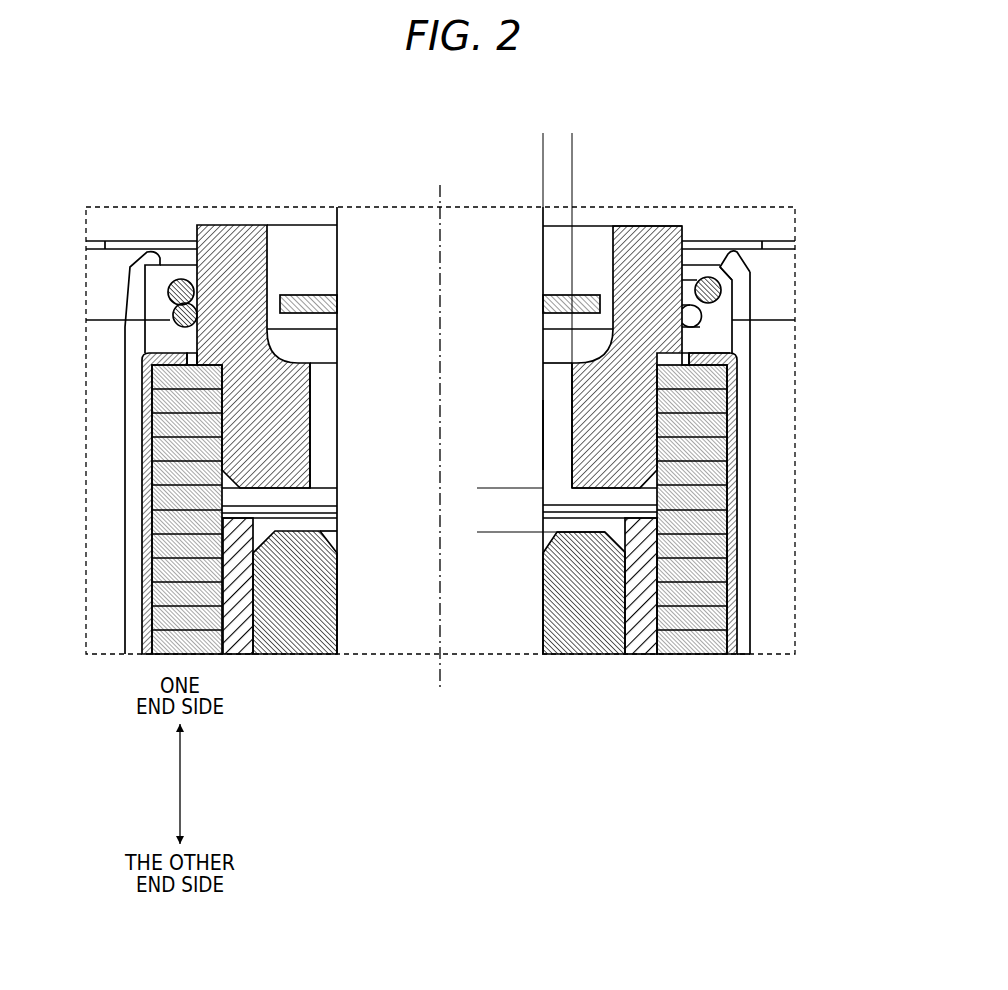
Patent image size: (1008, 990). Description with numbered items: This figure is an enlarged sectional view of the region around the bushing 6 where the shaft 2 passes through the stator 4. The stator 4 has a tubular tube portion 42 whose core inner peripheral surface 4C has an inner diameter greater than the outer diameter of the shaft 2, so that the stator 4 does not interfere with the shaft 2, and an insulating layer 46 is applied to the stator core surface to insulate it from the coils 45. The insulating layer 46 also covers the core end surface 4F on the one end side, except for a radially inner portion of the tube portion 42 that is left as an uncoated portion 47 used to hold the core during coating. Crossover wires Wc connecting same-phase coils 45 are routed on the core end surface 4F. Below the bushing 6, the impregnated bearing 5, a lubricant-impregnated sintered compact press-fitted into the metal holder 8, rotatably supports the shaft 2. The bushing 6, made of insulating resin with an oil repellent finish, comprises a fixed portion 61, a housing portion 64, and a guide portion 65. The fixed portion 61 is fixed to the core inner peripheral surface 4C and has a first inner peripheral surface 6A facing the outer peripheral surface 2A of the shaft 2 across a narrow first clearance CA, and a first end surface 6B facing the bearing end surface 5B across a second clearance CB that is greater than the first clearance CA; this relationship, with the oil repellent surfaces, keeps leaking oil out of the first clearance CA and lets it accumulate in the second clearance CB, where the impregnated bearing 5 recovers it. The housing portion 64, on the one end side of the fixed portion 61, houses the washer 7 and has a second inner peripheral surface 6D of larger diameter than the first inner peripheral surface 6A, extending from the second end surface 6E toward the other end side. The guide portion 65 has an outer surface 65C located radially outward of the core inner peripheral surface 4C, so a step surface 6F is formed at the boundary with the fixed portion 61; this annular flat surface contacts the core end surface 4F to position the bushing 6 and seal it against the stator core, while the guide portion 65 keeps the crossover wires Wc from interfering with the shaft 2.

The shaft 2 is at (488, 658).
The outer peripheral surface of the shaft 2A is at (548, 434).
The stator 4 is at (740, 659).
The core inner peripheral surface 4C is at (645, 498).
The core end surface 4F is at (717, 352).
The impregnated bearing 5 is at (567, 658).
The bearing end surface 5B is at (560, 532).
The bushing 6 is at (235, 222).
The first inner peripheral surface 6A is at (570, 410).
The first end surface 6B is at (572, 490).
The second inner peripheral surface 6D is at (613, 270).
The second end surface 6E is at (633, 226).
The step surface 6F is at (592, 360).
The washer 7 is at (324, 293).
The metal holder 8 is at (641, 658).
The tube portion 42 is at (706, 658).
The coils 45 is at (168, 258).
The insulating layer 46 is at (740, 382).
The uncoated portion 47 is at (690, 347).
The fixed portion 61 is at (313, 423).
The housing portion 64 is at (270, 238).
The guide portion 65 is at (195, 237).
The outer surface of the guide portion 65C is at (690, 262).
The crossover wire Wc is at (180, 326).
The first clearance CA is at (503, 143).
The second clearance CB is at (487, 490).